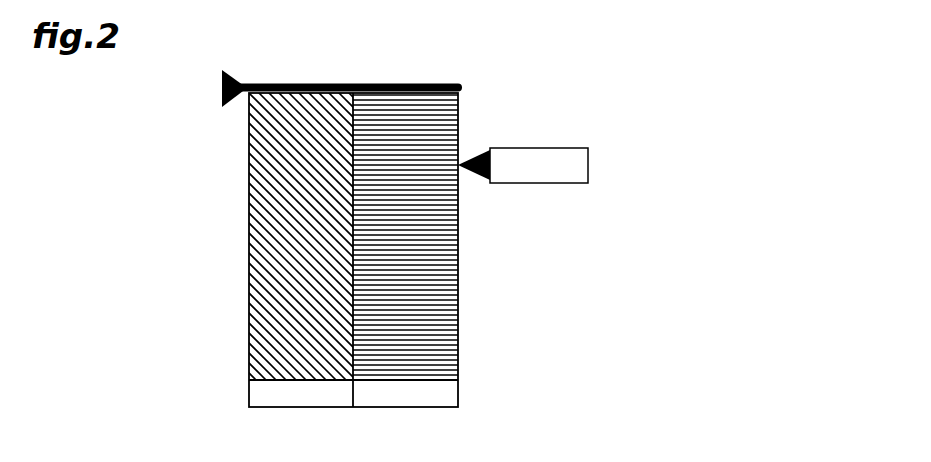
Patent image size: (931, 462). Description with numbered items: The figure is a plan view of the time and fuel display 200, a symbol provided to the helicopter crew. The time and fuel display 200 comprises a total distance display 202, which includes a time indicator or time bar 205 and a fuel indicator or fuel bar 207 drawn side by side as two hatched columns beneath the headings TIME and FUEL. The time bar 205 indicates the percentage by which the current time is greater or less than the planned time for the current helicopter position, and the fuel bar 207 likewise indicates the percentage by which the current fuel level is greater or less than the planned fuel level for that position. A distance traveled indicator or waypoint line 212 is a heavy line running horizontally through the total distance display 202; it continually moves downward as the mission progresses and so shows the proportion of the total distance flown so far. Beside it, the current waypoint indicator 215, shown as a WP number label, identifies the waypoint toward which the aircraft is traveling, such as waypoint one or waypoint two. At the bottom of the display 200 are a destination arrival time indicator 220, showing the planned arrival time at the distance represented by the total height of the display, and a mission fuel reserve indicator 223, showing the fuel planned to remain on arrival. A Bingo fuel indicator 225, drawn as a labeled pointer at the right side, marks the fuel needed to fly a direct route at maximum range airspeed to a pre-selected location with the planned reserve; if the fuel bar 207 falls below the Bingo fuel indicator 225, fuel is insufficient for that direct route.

The time and fuel display 200 is at (333, 213).
The total distance display 202 is at (460, 322).
The time indicator (time bar) 205 is at (273, 232).
The fuel indicator (fuel bar) 207 is at (437, 232).
The distance traveled indicator (waypoint line) 212 is at (245, 83).
The current waypoint indicator 215 is at (193, 97).
The destination arrival time indicator 220 is at (250, 396).
The mission fuel reserve (MFR) indicator 223 is at (450, 398).
The Bingo fuel indicator 225 is at (553, 183).